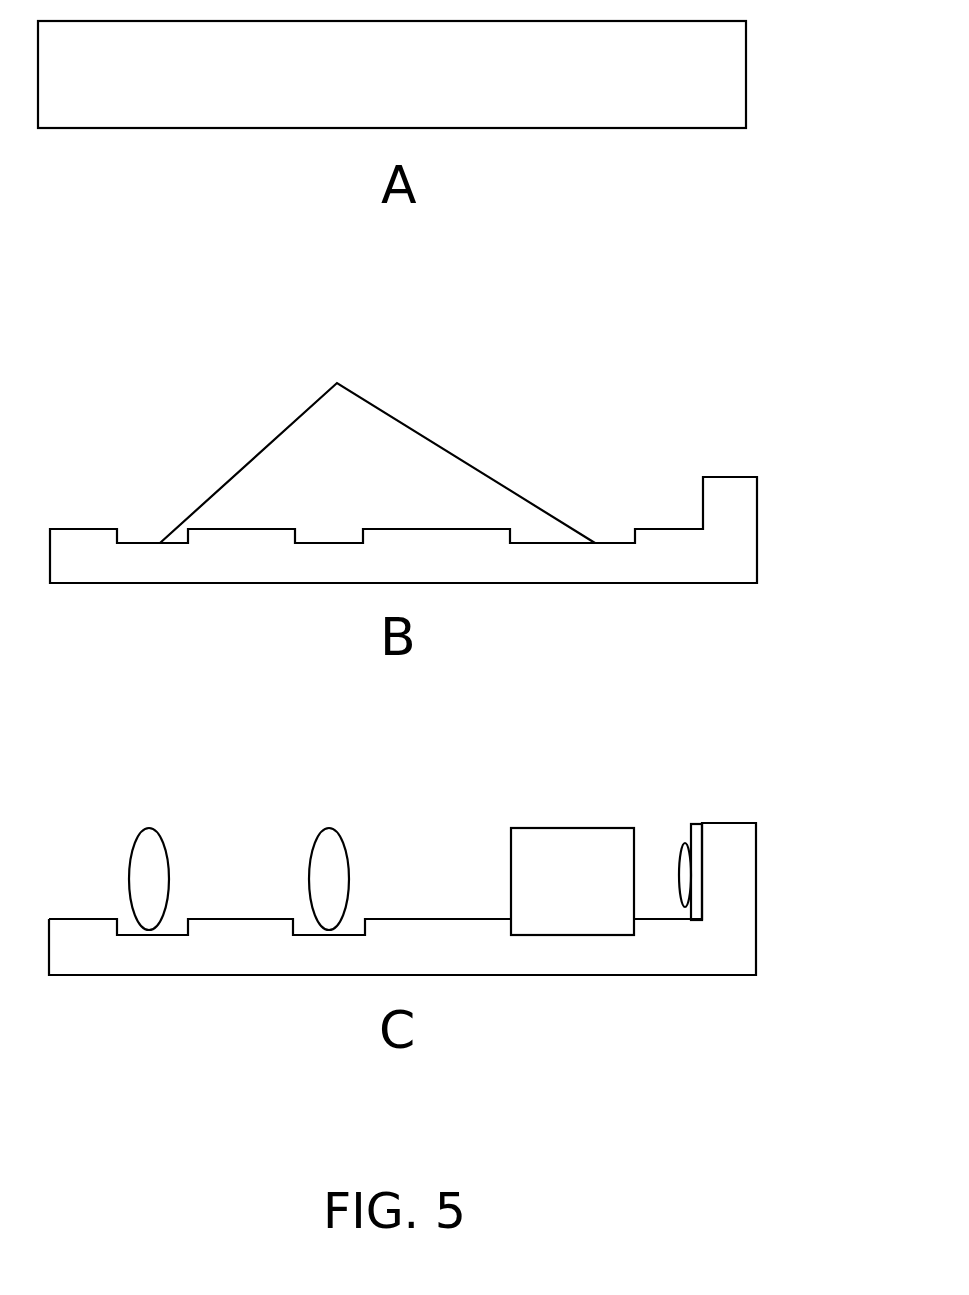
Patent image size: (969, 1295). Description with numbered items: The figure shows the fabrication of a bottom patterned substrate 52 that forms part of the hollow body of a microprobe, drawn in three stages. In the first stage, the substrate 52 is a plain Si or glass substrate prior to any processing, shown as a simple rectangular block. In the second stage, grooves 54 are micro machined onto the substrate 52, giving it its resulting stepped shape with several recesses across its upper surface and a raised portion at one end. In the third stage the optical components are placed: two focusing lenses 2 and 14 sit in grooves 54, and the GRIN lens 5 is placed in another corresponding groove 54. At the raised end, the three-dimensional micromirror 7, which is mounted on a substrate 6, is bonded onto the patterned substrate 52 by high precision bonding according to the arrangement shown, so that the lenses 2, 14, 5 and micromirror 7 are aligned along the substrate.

In FIG. 5A, the bottom patterned substrate 52 is at (717, 89).
In FIG. 5B, the bottom patterned substrate 52 is at (743, 490).
In FIG. 5B, the grooves 54 is at (337, 543).
In FIG. 5C, the focusing lens 2 is at (146, 894).
In FIG. 5C, the focusing lens 14 is at (335, 894).
In FIG. 5C, the GRIN lens 5 is at (539, 908).
In FIG. 5C, the substrate 6 is at (698, 868).
In FIG. 5C, the 3-D micromirror 7 is at (688, 920).